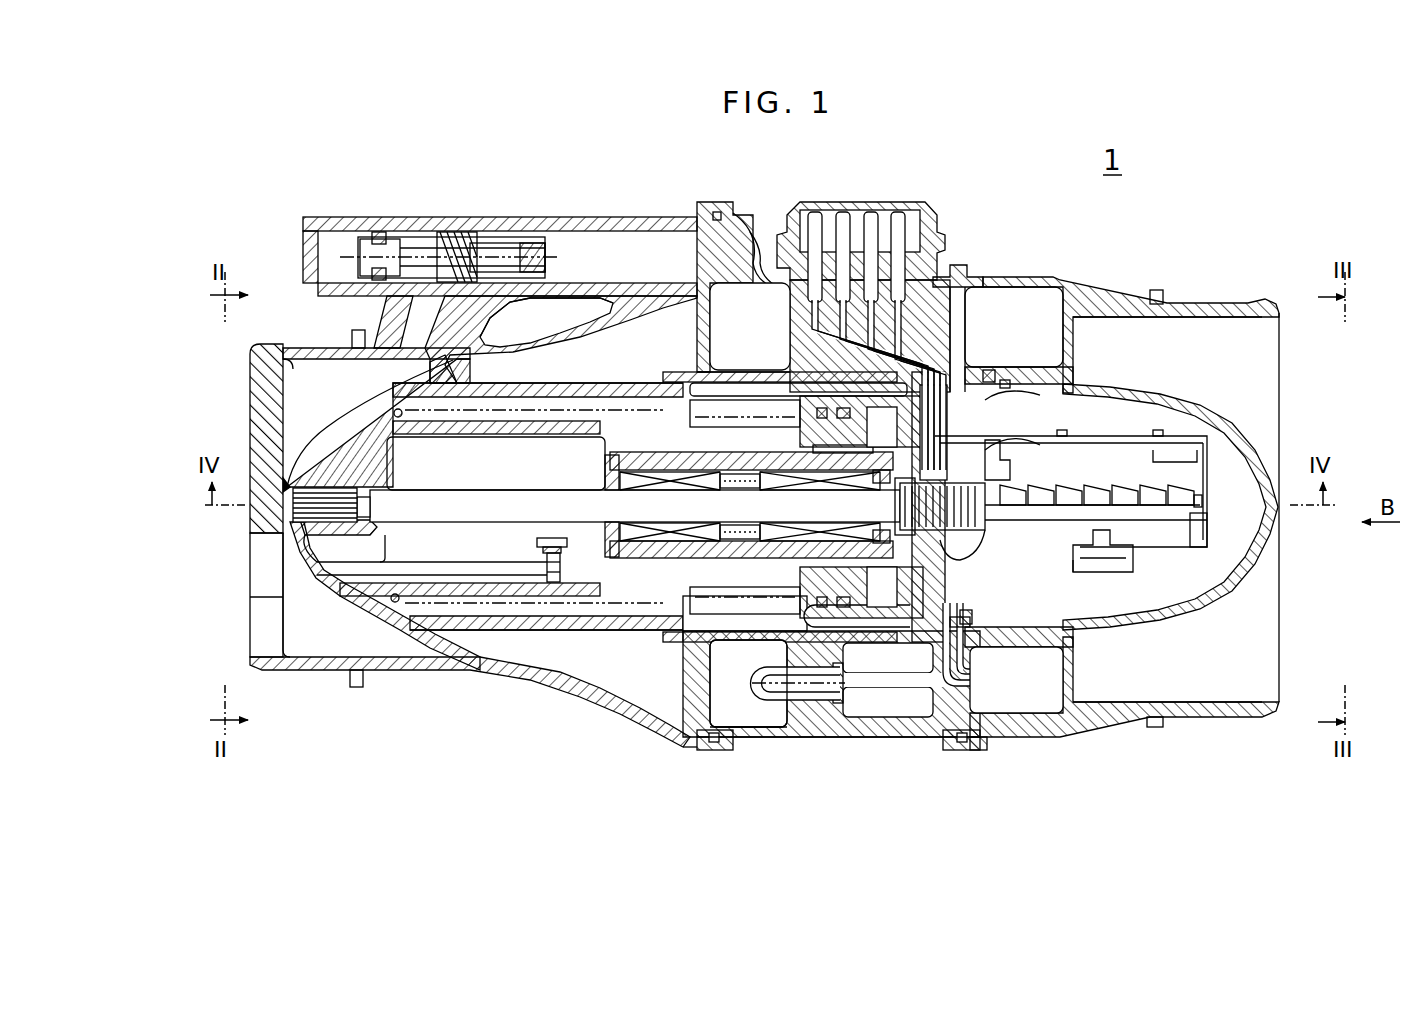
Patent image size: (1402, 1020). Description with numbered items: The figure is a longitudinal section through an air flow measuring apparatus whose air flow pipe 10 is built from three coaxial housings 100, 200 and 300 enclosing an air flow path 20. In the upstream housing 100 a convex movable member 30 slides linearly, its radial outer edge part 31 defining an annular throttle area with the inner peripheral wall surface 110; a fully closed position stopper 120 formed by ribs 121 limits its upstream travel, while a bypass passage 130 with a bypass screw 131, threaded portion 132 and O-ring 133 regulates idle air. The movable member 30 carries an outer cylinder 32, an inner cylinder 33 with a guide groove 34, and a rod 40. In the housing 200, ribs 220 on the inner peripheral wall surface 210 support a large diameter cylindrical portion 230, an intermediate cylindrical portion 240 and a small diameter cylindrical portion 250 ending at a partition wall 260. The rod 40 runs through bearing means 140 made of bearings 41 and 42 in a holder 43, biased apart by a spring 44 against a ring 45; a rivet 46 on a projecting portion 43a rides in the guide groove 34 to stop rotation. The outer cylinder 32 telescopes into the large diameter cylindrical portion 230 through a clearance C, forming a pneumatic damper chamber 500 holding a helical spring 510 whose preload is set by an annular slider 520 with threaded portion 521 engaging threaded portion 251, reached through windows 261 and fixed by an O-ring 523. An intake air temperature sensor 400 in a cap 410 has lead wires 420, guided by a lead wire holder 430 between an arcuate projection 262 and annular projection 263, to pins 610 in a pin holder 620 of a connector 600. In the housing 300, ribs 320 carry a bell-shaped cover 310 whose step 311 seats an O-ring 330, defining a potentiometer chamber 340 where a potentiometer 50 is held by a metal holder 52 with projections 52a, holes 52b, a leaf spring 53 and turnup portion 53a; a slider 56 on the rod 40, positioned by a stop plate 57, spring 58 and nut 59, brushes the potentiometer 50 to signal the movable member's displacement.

The air flow pipe 10 is at (690, 737).
The air flow path 20 is at (320, 660).
The movable member 30 is at (333, 422).
The radial outer edge part 31 is at (448, 355).
The outer cylinder 32 is at (590, 383).
The inner cylinder 33 is at (436, 430).
The guide groove 34 is at (353, 582).
The rod 40 is at (502, 488).
The bearing 41 is at (773, 548).
The bearing 42 is at (678, 522).
The holder 43 is at (707, 552).
The projecting portion 43a is at (555, 538).
The spring 44 is at (748, 488).
The ring 45 is at (605, 480).
The rivet 46 is at (547, 565).
The potentiometer 50 is at (1182, 474).
The metal holder 52 is at (1060, 555).
The projections 52a is at (1062, 430).
The holes 52b is at (1127, 567).
The leaf spring 53 is at (1147, 553).
The turnup portion 53a is at (1190, 527).
The slider 56 is at (942, 540).
The stop plate 57 is at (883, 470).
The spring 58 is at (903, 500).
The nut 59 is at (985, 480).
The housing 100 is at (483, 673).
The inner peripheral wall surface 110 is at (500, 360).
The fully closed position stopper 120 is at (250, 522).
The ribs 121 is at (267, 390).
The bypass passage 130 is at (623, 252).
The bypass screw 131 is at (410, 240).
The threaded portion 132 is at (425, 243).
The O-ring 133 is at (383, 233).
The bearing means 140 is at (672, 564).
The housing 200 is at (836, 745).
The inner peripheral wall surface 210 is at (740, 727).
The ribs 220 is at (803, 661).
The large diameter cylindrical portion 230 is at (720, 377).
The intermediate cylindrical portion 240 is at (808, 405).
The small diameter cylindrical portion 250 is at (707, 458).
The threaded portion 251 is at (807, 453).
The partition wall 260 is at (918, 558).
The through-windows 261 is at (875, 672).
The arcuate projection 262 is at (950, 570).
The annular projection 263 is at (1003, 390).
The housing 300 is at (1070, 738).
The cover 310 is at (1203, 607).
The step 311 is at (983, 630).
The ribs 320 is at (1074, 352).
The O-ring 330 is at (988, 377).
The potentiometer chamber 340 is at (1250, 560).
The intake air temperature sensor 400 is at (735, 677).
The cap 410 is at (777, 733).
The lead wires 420 is at (900, 690).
The lead wire holder 430 is at (973, 620).
The pneumatic damper chamber 500 is at (650, 385).
The helical spring 510 is at (593, 413).
The annular slider 520 is at (810, 611).
The threaded portion 521 is at (830, 447).
The O-ring 523 is at (773, 387).
The connector 600 is at (905, 196).
The conductive pins 610 is at (845, 225).
The pin holder 620 is at (937, 300).
The clearance C is at (660, 633).